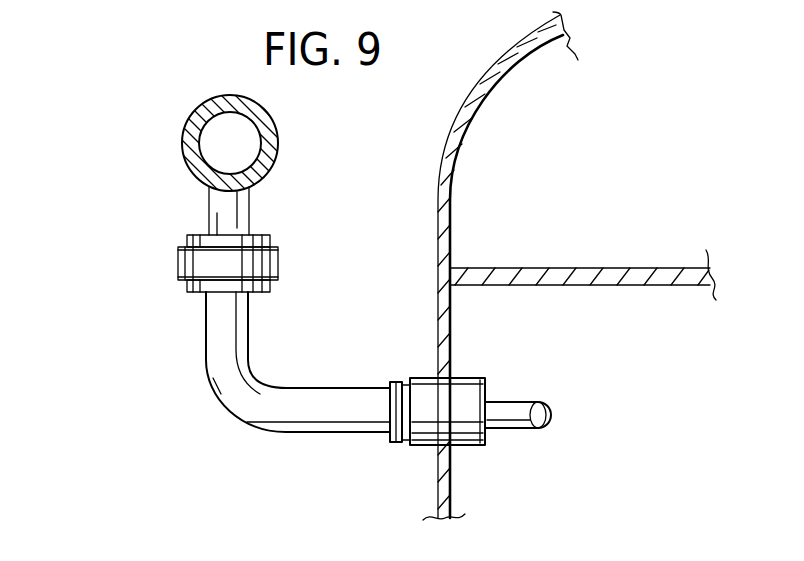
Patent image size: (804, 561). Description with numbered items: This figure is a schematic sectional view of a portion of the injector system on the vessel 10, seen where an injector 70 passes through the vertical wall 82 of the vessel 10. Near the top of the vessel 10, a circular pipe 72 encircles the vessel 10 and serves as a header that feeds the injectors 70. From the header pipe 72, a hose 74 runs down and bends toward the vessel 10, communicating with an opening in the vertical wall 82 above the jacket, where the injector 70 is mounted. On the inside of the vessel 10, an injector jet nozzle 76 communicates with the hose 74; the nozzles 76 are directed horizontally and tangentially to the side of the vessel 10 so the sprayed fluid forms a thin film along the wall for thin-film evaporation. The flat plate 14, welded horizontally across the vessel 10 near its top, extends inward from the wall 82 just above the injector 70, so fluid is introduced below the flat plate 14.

The vessel 10 is at (450, 136).
The flat plate 14 is at (532, 268).
The injector 70 is at (415, 378).
The circular pipe 72 is at (185, 132).
The hose 74 is at (225, 398).
The injector jet nozzle 76 is at (512, 430).
The vertical wall 82 is at (437, 445).